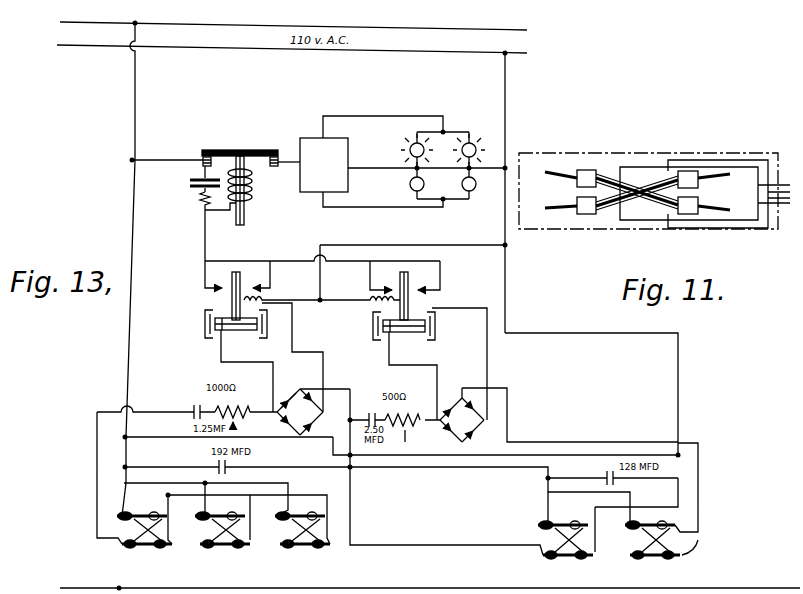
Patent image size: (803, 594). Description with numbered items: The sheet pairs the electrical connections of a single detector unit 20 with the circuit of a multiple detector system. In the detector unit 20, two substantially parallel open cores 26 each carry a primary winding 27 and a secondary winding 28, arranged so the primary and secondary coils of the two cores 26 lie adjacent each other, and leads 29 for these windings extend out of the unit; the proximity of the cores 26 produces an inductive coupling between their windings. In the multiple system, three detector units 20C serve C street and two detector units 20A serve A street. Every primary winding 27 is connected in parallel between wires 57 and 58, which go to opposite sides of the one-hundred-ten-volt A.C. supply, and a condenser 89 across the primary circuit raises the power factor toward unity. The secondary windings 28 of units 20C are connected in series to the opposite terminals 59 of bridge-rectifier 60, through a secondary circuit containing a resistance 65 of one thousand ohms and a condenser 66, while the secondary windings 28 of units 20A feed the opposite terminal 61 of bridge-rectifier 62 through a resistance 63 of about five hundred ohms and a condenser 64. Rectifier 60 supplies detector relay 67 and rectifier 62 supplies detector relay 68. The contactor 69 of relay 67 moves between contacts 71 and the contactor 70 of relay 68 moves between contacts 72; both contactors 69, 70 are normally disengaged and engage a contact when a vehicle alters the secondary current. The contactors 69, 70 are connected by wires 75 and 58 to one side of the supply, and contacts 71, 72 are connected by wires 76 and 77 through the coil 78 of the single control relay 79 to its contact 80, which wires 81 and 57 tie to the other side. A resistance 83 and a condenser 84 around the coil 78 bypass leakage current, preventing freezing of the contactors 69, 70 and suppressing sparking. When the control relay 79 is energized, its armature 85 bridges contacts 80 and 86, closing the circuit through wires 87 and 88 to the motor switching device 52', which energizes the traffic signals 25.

In FIG. 13, the wire 57 is at (129, 252).
In FIG. 13, the wire 81 is at (184, 160).
In FIG. 13, the armature 85 is at (240, 150).
In FIG. 13, the contact 80 is at (203, 169).
In FIG. 13, the contact 86 is at (275, 169).
In FIG. 13, the wire 87 is at (298, 160).
In FIG. 13, the motor switching device 52' is at (317, 153).
In FIG. 13, the control relay 79 is at (250, 214).
In FIG. 13, the coil 78 is at (250, 200).
In FIG. 13, the condenser 84 is at (190, 187).
In FIG. 13, the resistance 83 is at (199, 200).
In FIG. 13, the wire 77 is at (204, 236).
In FIG. 13, the traffic signals 25 is at (415, 180).
In FIG. 13, the wire 88 is at (481, 156).
In FIG. 13, the wire 75 is at (435, 247).
In FIG. 13, the wire 76 is at (316, 258).
In FIG. 13, the contacts 71 is at (261, 287).
In FIG. 13, the contacts 72 is at (427, 289).
In FIG. 13, the contactor 69 is at (259, 342).
In FIG. 13, the contactor 70 is at (403, 346).
In FIG. 13, the detector relay 67 is at (233, 334).
In FIG. 13, the detector relay 68 is at (413, 338).
In FIG. 13, the condenser 66 is at (193, 412).
In FIG. 13, the resistance 65 is at (238, 408).
In FIG. 13, the terminals 59 is at (300, 416).
In FIG. 13, the bridge-rectifier 60 is at (289, 404).
In FIG. 13, the condenser 64 is at (369, 412).
In FIG. 13, the resistance 63 is at (405, 428).
In FIG. 13, the terminal 61 is at (469, 436).
In FIG. 13, the bridge-rectifier 62 is at (488, 421).
In FIG. 13, the wire 58 is at (680, 390).
In FIG. 13, the condenser 89 is at (607, 478).
In FIG. 13, the detector units 20C is at (303, 550).
In FIG. 13, the detector units 20A is at (650, 560).
In FIG. 13, the primary winding 27 is at (601, 558).
In FIG. 11, the primary winding 27 is at (688, 214).
In FIG. 13, the secondary winding 28 is at (545, 556).
In FIG. 11, the secondary winding 28 is at (588, 214).
In FIG. 11, the detector unit 20 is at (539, 163).
In FIG. 11, the core 26 is at (708, 182).
In FIG. 11, the leads 29 is at (640, 175).